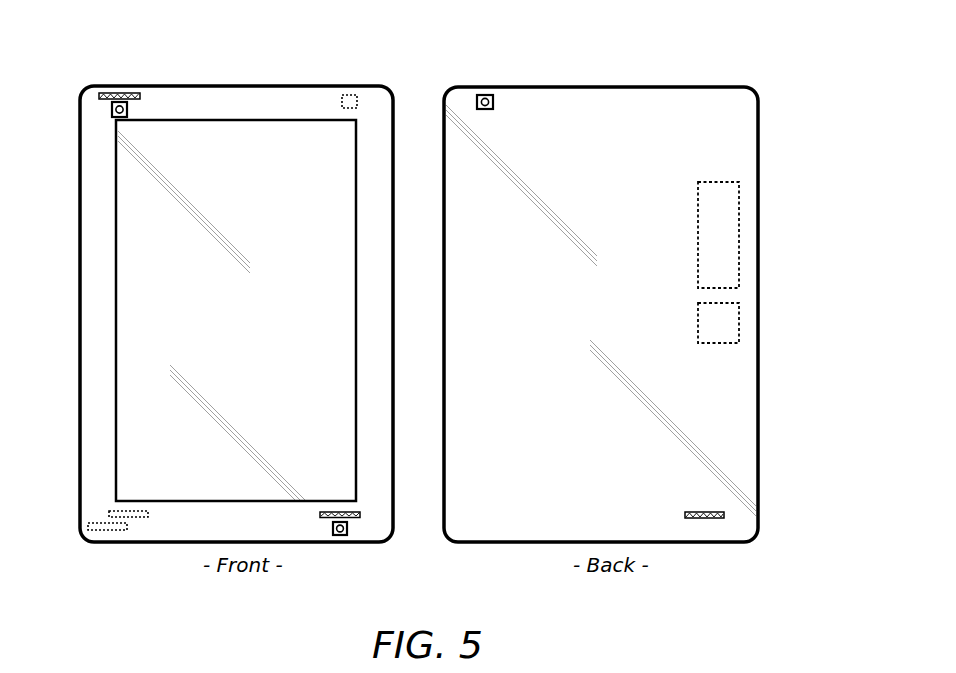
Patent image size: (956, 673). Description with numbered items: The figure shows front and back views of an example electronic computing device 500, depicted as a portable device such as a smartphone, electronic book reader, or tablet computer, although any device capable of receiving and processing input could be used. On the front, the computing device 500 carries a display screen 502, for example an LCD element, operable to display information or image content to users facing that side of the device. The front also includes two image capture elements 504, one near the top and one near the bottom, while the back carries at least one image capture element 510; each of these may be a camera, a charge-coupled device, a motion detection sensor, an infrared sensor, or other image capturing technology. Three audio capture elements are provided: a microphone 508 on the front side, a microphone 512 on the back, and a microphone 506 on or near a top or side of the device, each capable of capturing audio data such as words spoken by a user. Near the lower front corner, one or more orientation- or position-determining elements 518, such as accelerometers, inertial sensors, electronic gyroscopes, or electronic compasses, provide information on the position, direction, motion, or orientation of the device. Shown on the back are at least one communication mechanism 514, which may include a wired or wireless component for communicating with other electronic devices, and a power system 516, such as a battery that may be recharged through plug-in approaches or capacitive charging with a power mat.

The electronic computing device 500 is at (782, 90).
The display screen 502 is at (116, 230).
The image capture elements 504 is at (112, 110).
The microphone 506 is at (128, 92).
The microphone 508 is at (355, 520).
The image capture element 510 is at (347, 96).
The microphone 512 is at (130, 518).
The communication mechanism 514 is at (739, 252).
The power system 516 is at (739, 325).
The orientation- or position-determining elements 518 is at (105, 532).